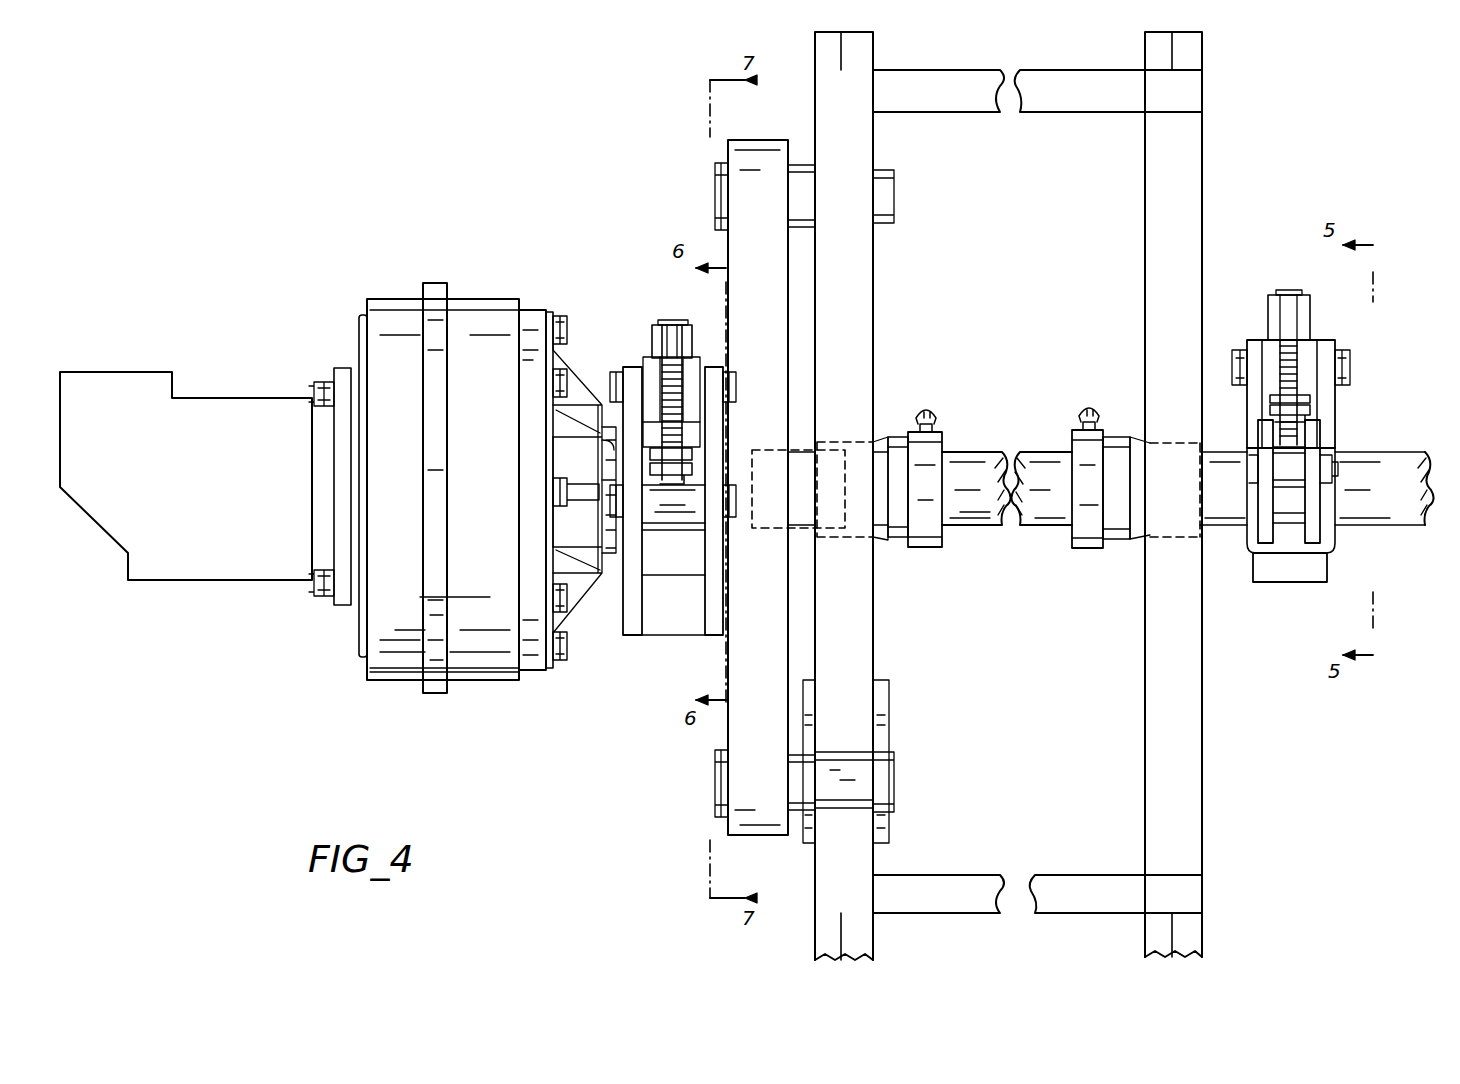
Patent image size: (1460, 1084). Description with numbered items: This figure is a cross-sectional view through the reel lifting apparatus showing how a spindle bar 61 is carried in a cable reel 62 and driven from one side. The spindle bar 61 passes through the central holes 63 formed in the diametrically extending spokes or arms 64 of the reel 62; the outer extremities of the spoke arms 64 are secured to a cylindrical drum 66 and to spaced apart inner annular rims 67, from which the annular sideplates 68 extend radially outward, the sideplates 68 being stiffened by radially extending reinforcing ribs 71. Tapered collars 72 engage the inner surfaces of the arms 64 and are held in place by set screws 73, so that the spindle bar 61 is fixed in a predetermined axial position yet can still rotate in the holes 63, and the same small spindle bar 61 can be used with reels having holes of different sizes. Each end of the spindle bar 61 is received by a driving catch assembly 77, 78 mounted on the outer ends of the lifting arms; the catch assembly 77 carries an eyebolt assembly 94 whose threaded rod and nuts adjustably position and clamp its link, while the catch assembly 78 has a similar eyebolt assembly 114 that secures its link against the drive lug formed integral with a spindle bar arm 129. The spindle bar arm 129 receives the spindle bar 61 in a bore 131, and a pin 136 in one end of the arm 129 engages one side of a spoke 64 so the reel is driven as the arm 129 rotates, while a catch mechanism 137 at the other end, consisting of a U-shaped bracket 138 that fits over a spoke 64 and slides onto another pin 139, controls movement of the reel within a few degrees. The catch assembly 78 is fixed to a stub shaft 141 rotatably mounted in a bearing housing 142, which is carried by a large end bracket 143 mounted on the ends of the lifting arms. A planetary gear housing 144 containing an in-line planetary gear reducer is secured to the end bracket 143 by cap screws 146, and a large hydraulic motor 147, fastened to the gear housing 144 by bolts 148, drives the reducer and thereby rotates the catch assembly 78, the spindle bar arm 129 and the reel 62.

The spindle bar 61 is at (972, 520).
The cable reel 62 is at (1205, 762).
The central hole 63 is at (830, 442).
The spoke arm 64 is at (855, 635).
The cylindrical drum 66 is at (1088, 100).
The inner annular rim 67 is at (1190, 90).
The annular sideplate 68 is at (1148, 937).
The reinforcing rib 71 is at (1195, 940).
The tapered collar 72 is at (930, 452).
The set screw 73 is at (922, 410).
The driving catch assembly 77 is at (1298, 585).
The driving catch assembly 78 is at (684, 646).
The eyebolt assembly 94 is at (1275, 296).
The eyebolt assembly 114 is at (660, 325).
The spindle bar arm 129 is at (758, 487).
The bore 131 is at (768, 452).
The pin 136 is at (895, 194).
The catch mechanism 137 is at (893, 815).
The U-shaped bracket 138 is at (882, 700).
The pin 139 is at (853, 776).
The stub shaft 141 is at (615, 556).
The bearing housing 142 is at (576, 590).
The end bracket 143 is at (538, 300).
The planetary gear housing 144 is at (413, 310).
The cap screw 146 is at (565, 322).
The hydraulic motor 147 is at (150, 385).
The bolt 148 is at (320, 382).